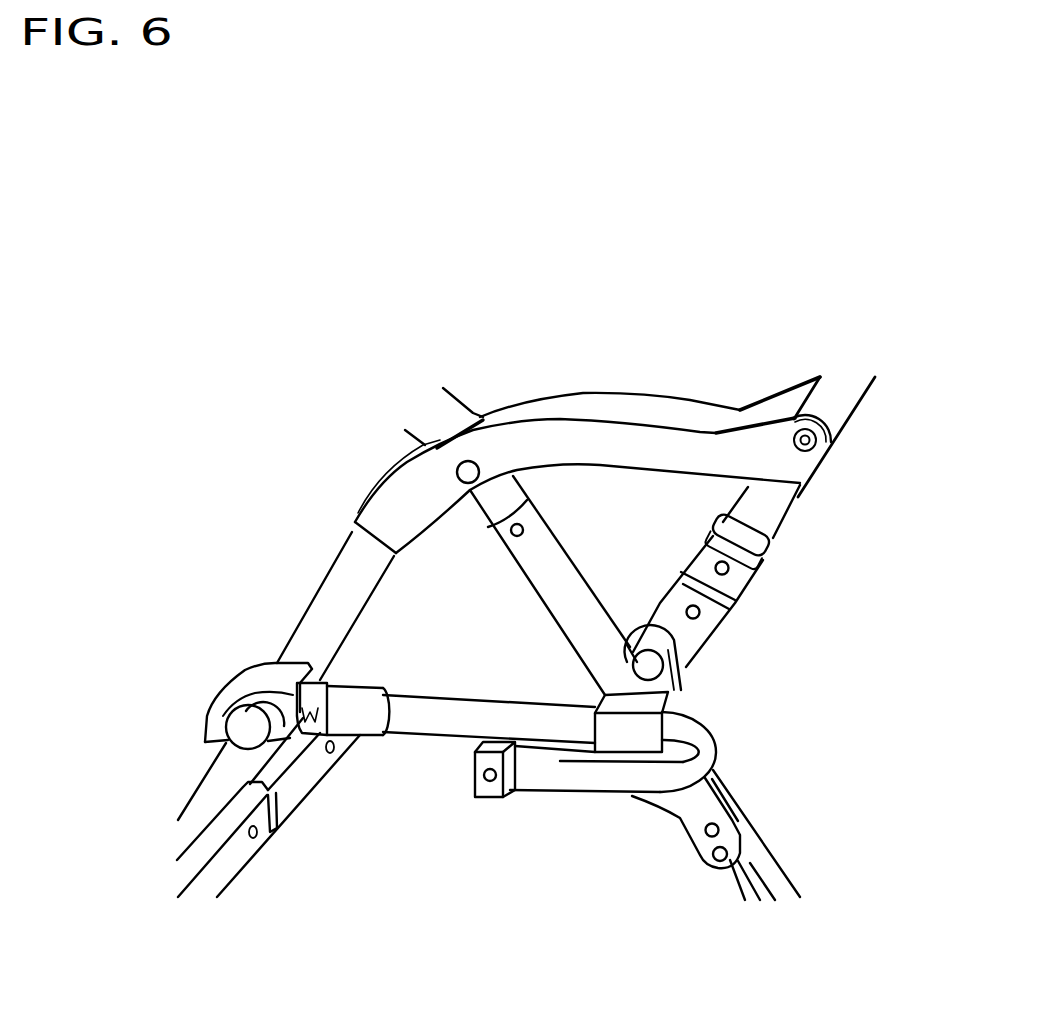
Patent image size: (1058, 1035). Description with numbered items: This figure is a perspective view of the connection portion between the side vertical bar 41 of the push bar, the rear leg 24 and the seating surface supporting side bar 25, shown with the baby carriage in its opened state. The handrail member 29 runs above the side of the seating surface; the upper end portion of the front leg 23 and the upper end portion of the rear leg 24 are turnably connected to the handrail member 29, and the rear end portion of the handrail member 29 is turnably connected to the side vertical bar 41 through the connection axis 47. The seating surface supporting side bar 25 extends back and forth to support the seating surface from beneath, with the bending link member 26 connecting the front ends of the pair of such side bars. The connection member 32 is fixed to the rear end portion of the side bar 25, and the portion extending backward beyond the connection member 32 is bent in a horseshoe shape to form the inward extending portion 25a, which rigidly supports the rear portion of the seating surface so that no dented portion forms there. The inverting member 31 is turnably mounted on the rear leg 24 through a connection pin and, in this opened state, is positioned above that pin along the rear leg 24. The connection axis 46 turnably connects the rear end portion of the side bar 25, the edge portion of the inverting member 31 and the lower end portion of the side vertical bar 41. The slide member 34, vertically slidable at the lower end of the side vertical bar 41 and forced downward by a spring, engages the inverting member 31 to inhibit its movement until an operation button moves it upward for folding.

The front leg 23 is at (327, 598).
The rear leg 24 is at (762, 863).
The seating surface supporting side bar 25 is at (423, 723).
The inward extending portion 25a is at (558, 782).
The bending link member 26 is at (198, 848).
The handrail member 29 is at (600, 395).
The inverting member 31 is at (710, 611).
The connection member 32 is at (643, 735).
The slide member 34 is at (742, 572).
The side vertical bar 41 is at (840, 395).
The connection axis 46 is at (655, 665).
The connection axis 47 is at (812, 441).